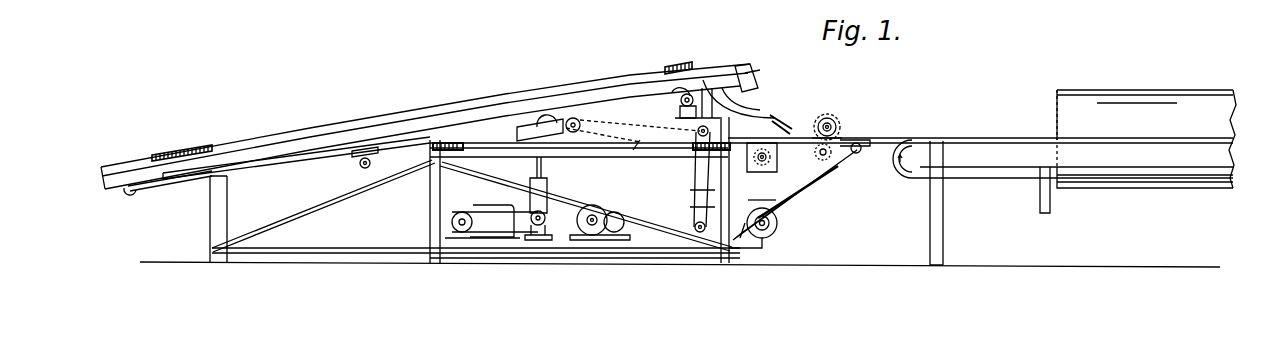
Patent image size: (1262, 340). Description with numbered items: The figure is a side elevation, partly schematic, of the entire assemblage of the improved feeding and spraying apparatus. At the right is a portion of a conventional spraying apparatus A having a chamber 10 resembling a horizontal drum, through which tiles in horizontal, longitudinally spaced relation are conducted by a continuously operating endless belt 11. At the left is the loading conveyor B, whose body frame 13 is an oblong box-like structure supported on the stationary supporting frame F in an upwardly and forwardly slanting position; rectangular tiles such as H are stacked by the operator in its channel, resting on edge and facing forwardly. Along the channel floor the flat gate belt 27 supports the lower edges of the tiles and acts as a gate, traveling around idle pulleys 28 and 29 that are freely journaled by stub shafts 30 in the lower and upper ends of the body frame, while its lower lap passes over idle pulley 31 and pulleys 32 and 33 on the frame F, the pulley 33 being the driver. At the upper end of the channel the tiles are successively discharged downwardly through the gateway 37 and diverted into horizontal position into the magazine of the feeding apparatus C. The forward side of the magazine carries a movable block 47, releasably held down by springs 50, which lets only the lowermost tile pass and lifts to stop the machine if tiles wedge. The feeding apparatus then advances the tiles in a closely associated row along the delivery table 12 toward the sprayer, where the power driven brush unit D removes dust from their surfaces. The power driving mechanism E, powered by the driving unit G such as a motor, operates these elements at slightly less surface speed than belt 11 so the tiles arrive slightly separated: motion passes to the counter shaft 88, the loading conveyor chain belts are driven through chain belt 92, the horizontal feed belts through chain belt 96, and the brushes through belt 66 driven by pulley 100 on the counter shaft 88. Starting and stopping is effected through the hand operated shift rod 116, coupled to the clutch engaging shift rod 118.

The chamber 10 is at (1138, 151).
The endless belt 11 is at (903, 137).
The delivery table 12 is at (858, 140).
The body frame 13 is at (346, 132).
The gate belt 27 is at (281, 181).
The idle pulley 28 is at (137, 196).
The idle pulley 29 is at (680, 97).
The stub shaft 30 is at (695, 95).
The idle pulley 31 is at (371, 167).
The pulley 32 is at (547, 120).
The driving pulley 33 is at (573, 118).
The gateway 37 is at (762, 68).
The block 47 is at (776, 120).
The springs 50 is at (799, 118).
The belt 66 is at (820, 197).
The counter shaft 88 is at (763, 228).
The chain belt 92 is at (695, 196).
The chain belt 96 is at (756, 191).
The pulley 100 is at (777, 236).
The shift rod 116 is at (640, 152).
The clutch engaging shift rod 118 is at (543, 177).
The spraying apparatus A is at (1065, 112).
The loading conveyor B is at (435, 110).
The feeding apparatus C is at (745, 103).
The power driven brush unit D is at (836, 120).
The power driving mechanism E is at (692, 182).
The stationary supporting frame F is at (586, 205).
The power driving unit G is at (483, 204).
The tiles H is at (679, 64).